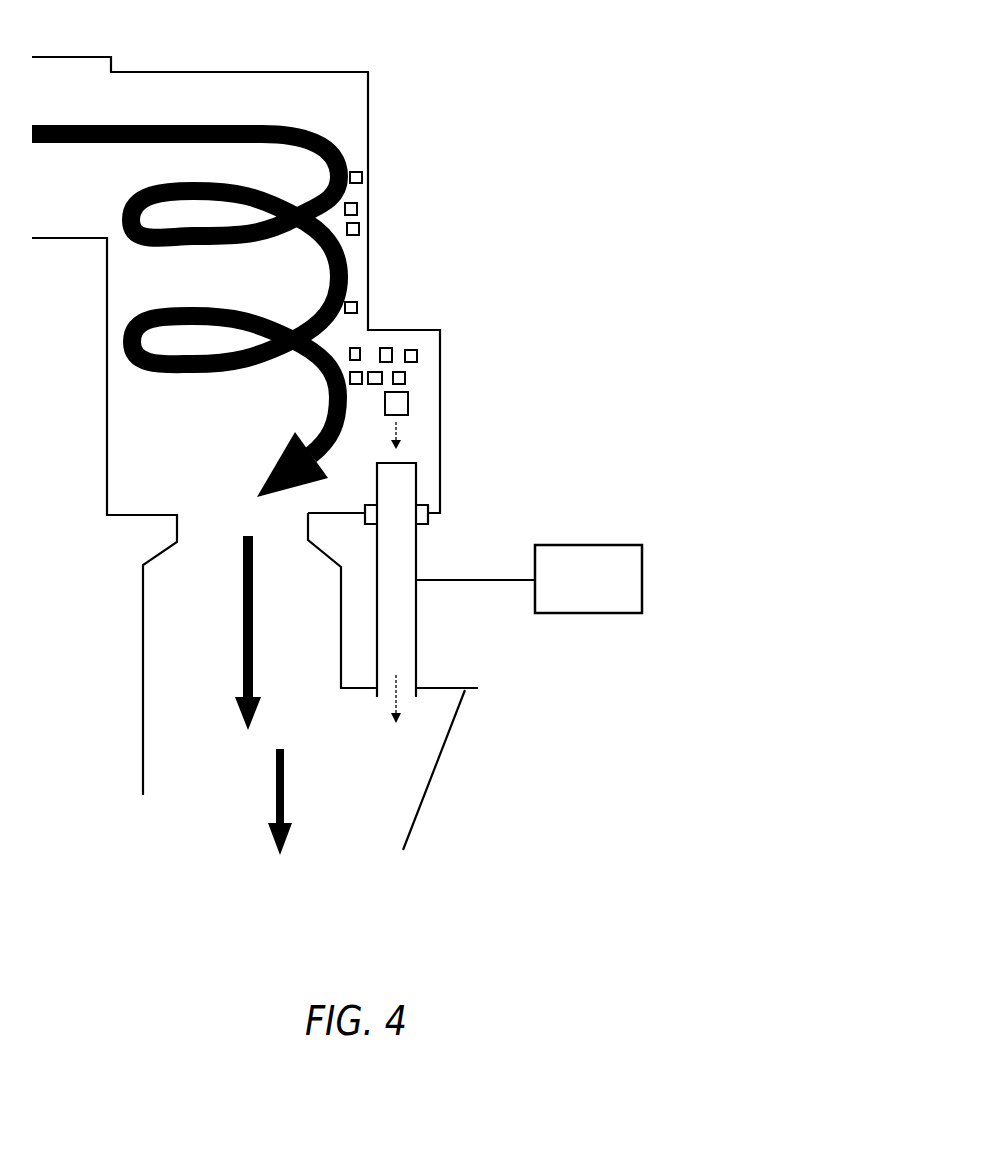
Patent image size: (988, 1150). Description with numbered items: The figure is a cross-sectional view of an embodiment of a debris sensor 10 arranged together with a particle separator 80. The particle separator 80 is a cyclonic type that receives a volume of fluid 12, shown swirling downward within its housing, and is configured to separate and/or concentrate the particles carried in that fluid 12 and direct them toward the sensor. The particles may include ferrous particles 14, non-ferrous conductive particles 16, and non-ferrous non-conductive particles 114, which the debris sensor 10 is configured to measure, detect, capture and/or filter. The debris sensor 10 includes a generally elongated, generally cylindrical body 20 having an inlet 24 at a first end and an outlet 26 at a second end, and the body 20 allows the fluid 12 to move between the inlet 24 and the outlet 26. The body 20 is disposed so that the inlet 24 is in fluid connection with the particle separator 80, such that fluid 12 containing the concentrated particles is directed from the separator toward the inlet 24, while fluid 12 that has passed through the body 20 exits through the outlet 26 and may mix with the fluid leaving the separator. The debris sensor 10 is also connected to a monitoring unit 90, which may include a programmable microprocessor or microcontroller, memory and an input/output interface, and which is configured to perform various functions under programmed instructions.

The debris sensor 10 is at (429, 560).
The fluid 12 is at (250, 451).
The ferrous particles 14 is at (354, 162).
The non-ferrous conductive particles 16 is at (415, 385).
The non-ferrous non-conductive particles 114 is at (396, 403).
The body 20 is at (417, 635).
The inlet 24 is at (414, 459).
The outlet 26 is at (422, 697).
The particle separator 80 is at (406, 41).
The monitoring unit 90 is at (619, 545).